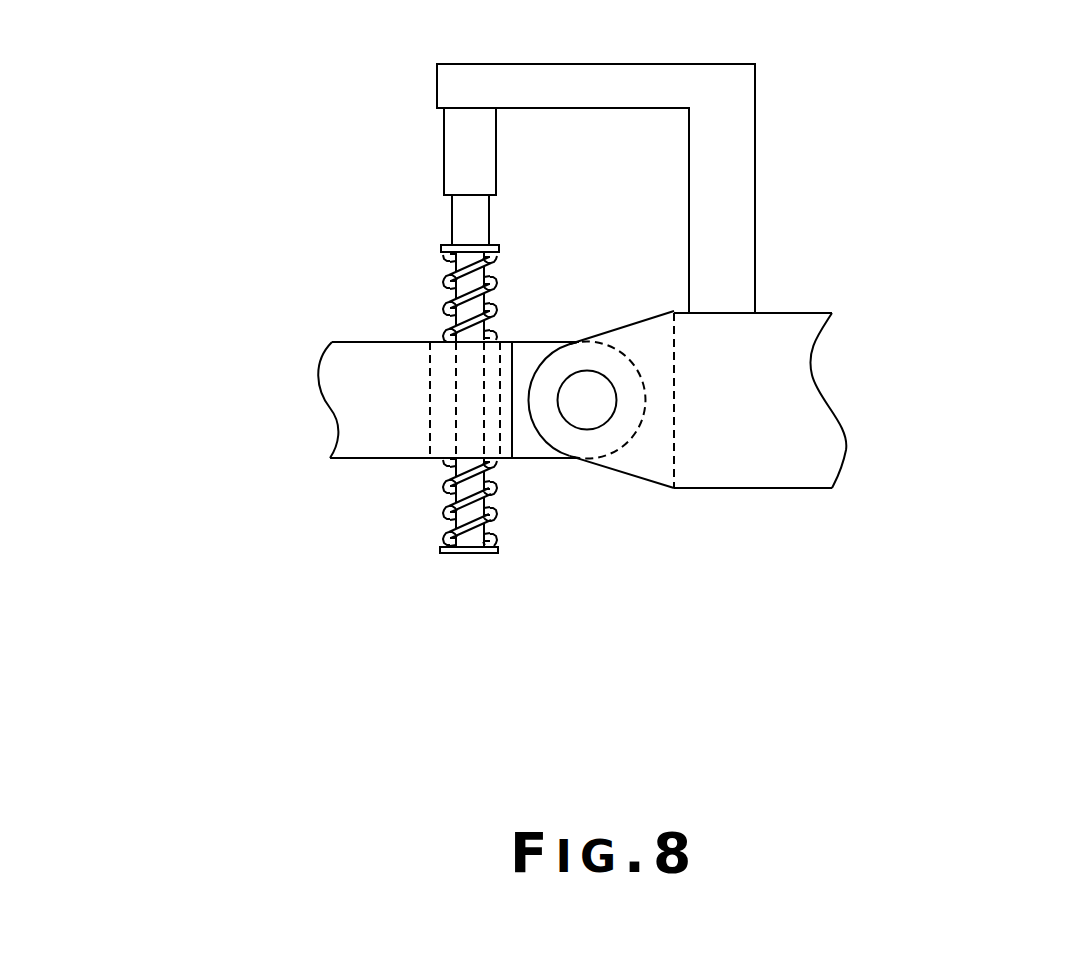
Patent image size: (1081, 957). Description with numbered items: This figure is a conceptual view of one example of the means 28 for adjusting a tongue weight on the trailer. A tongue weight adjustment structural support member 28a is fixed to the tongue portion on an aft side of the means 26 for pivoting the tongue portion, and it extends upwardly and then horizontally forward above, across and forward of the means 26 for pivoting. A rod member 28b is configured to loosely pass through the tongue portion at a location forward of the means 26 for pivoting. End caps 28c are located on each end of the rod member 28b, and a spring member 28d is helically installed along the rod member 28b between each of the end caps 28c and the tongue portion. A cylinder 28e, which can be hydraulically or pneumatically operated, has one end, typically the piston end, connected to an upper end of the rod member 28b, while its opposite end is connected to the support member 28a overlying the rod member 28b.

The means for adjusting a tongue weight 28 is at (342, 200).
The tongue weight adjustment structural support member 28a is at (720, 168).
The rod member 28b is at (496, 304).
The end caps 28c is at (498, 249).
The spring member 28d is at (442, 302).
The cylinder 28e is at (477, 178).
The means for pivoting the tongue portion 26 is at (592, 405).